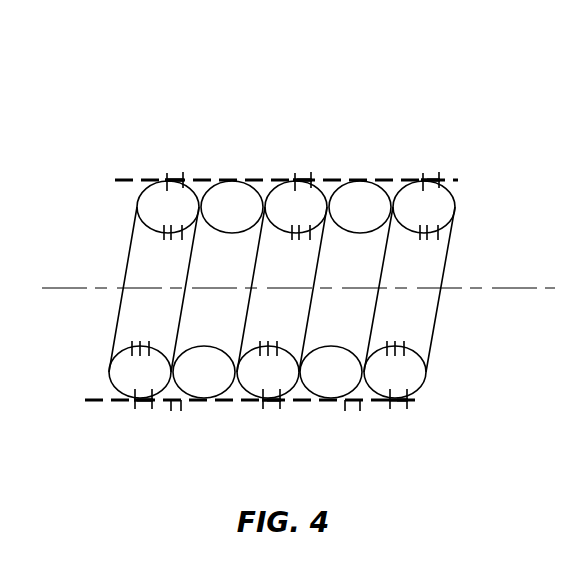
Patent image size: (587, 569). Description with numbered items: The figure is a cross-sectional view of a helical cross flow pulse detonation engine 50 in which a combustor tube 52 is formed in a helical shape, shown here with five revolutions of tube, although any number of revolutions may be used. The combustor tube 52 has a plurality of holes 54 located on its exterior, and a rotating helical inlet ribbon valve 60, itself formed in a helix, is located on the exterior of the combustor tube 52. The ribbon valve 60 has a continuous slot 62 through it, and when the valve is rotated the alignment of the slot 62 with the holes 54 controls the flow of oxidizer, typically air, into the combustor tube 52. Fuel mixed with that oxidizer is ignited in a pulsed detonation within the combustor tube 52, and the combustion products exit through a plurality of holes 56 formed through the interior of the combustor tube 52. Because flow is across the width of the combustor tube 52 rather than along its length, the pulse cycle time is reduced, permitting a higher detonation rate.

The helical cross flow pulse detonation engine 50 is at (298, 264).
The combustor tube 52 is at (458, 197).
The holes 54 is at (67, 442).
The holes 56 is at (140, 346).
The rotating helical inlet ribbon valve 60 is at (415, 405).
The continuous slot 62 is at (177, 407).